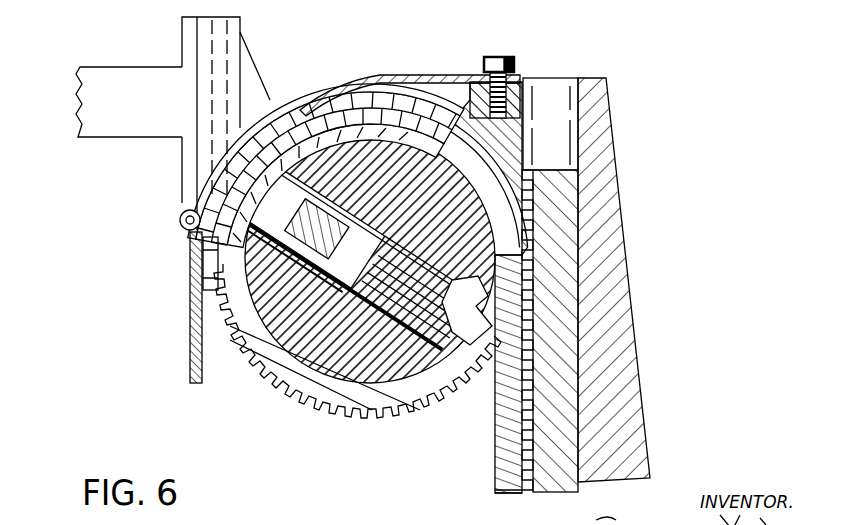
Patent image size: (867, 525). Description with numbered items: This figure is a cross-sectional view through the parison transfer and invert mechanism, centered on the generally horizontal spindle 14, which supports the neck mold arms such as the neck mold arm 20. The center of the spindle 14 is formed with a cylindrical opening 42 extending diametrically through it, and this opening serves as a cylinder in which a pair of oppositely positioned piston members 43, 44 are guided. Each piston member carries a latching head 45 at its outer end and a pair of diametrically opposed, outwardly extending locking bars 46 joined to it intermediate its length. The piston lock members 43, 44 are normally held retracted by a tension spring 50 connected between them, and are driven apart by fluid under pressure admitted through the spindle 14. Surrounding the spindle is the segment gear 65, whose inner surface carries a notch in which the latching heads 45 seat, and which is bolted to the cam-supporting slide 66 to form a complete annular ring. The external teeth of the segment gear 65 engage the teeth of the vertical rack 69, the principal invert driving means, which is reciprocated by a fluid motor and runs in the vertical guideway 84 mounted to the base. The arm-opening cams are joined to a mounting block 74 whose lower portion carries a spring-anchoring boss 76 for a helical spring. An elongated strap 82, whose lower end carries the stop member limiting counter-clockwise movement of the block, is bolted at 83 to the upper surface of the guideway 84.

The spindle 14 is at (362, 363).
The neck mold arm 20 is at (120, 80).
The cylindrical opening 42 is at (410, 180).
The piston member 43 is at (247, 258).
The piston member 44 is at (446, 362).
The latching head 45 is at (275, 183).
The locking bars 46 is at (450, 375).
The tension spring 50 is at (462, 267).
The segment gear 65 is at (298, 378).
The cam-supporting slide 66 is at (373, 104).
The vertical rack 69 is at (557, 257).
The mounting block 74 is at (305, 93).
The spring-anchoring boss 76 is at (180, 222).
The elongated strap 82 is at (195, 378).
The bolt 83 is at (487, 62).
The vertical guideway 84 is at (625, 410).